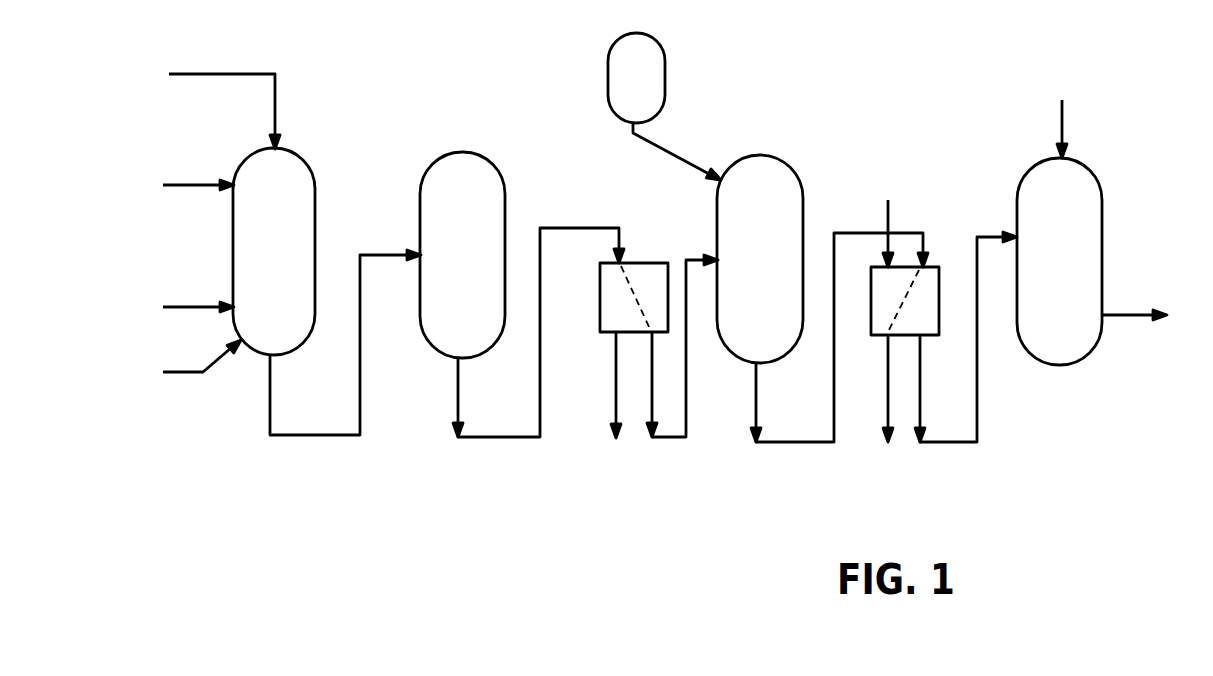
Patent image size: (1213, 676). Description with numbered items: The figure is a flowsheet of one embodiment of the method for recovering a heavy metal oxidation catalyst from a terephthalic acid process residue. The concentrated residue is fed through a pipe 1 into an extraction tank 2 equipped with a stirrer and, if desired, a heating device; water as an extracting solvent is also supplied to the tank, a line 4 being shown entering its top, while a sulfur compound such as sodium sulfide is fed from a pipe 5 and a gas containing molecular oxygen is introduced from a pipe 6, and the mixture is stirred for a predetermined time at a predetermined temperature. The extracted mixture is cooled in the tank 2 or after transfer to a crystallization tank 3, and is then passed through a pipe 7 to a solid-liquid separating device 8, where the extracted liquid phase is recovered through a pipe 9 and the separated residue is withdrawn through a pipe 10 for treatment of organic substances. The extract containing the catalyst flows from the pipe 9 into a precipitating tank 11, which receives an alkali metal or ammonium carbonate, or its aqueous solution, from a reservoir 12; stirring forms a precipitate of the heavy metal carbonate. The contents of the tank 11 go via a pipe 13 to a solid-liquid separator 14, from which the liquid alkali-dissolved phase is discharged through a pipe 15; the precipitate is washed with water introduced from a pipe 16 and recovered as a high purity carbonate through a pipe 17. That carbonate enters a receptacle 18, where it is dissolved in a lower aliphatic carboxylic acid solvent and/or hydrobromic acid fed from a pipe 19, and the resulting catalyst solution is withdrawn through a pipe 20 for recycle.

The pipe 1 is at (192, 185).
The extraction tank 2 is at (266, 266).
The crystallization tank 3 is at (453, 266).
The inlet stream 4 is at (217, 106).
The pipe 5 is at (192, 307).
The pipe 6 is at (196, 359).
The pipe 7 is at (517, 436).
The solid-liquid separating device 8 is at (600, 300).
The pipe 9 is at (652, 391).
The pipe 10 is at (616, 397).
The precipitating tank 11 is at (750, 269).
The reservoir 12 is at (627, 90).
The pipe 13 is at (790, 441).
The solid-liquid separator 14 is at (871, 300).
The pipe 15 is at (888, 401).
The pipe 16 is at (889, 222).
The pipe 17 is at (939, 441).
The receptacle 18 is at (1050, 276).
The pipe 19 is at (1063, 116).
The pipe 20 is at (1147, 315).